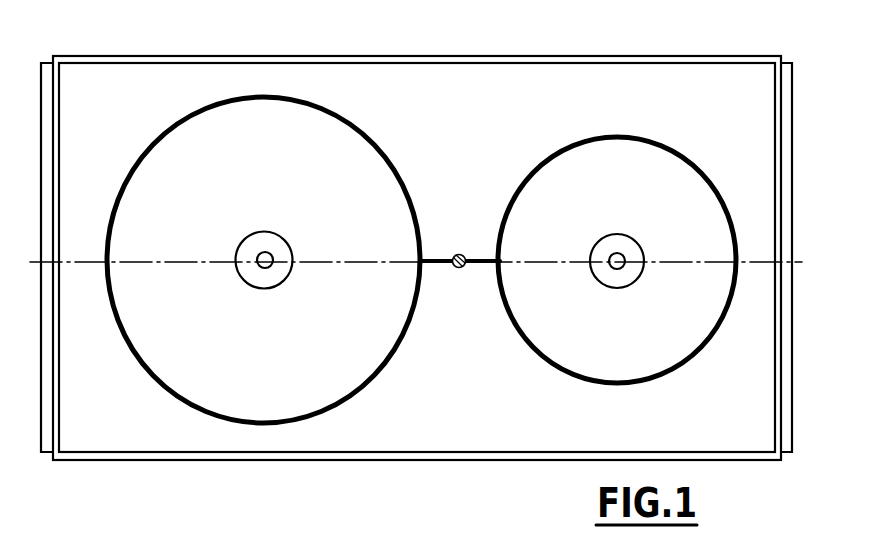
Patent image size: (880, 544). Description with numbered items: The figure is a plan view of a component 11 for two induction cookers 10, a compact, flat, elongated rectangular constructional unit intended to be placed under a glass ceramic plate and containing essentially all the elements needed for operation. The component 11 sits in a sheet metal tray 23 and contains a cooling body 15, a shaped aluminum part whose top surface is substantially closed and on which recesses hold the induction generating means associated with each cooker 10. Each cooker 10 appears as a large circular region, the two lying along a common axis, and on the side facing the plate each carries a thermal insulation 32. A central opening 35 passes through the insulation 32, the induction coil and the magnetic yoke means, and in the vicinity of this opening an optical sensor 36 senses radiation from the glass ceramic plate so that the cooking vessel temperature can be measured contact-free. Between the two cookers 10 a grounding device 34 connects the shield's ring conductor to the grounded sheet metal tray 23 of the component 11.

The induction cooker 10 is at (396, 153).
The component 11 is at (669, 57).
The cooling body 15 is at (474, 386).
The sheet metal tray 23 is at (508, 463).
The thermal insulation 32 is at (345, 345).
The grounding device 34 is at (461, 254).
The central opening 35 is at (627, 272).
The optical sensor 36 is at (267, 265).